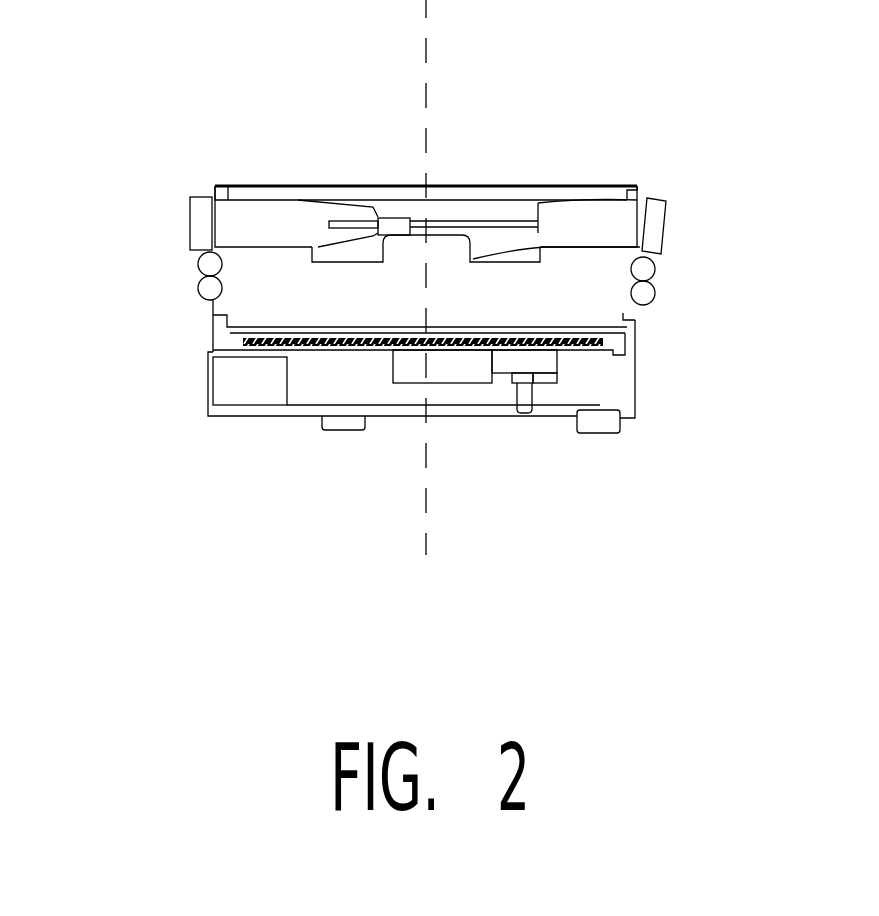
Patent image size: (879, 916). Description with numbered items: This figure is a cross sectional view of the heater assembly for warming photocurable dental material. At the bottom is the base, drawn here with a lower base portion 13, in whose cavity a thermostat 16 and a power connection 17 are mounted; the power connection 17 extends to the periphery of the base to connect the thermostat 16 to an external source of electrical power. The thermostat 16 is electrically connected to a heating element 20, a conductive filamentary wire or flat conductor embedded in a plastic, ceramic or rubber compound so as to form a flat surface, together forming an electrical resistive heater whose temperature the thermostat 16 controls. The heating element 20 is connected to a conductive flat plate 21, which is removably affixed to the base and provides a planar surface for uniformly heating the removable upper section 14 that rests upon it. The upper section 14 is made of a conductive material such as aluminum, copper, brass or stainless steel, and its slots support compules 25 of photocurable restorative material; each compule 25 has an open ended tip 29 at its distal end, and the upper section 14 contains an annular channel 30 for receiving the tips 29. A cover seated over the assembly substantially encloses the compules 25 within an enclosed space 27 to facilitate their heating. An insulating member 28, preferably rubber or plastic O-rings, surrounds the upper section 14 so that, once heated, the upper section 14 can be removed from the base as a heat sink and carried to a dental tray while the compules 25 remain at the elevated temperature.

The base 13 is at (407, 454).
The removable upper section 14 is at (348, 237).
The thermostat 16 is at (544, 456).
The power connection 17 is at (346, 428).
The heating element 20 is at (519, 424).
The conductive flat plate 21 is at (351, 345).
The compule 25 is at (501, 253).
The enclosed space 27 is at (426, 119).
The insulating member 28 is at (499, 316).
The open ended tip 29 is at (517, 145).
The annular channel 30 is at (299, 187).